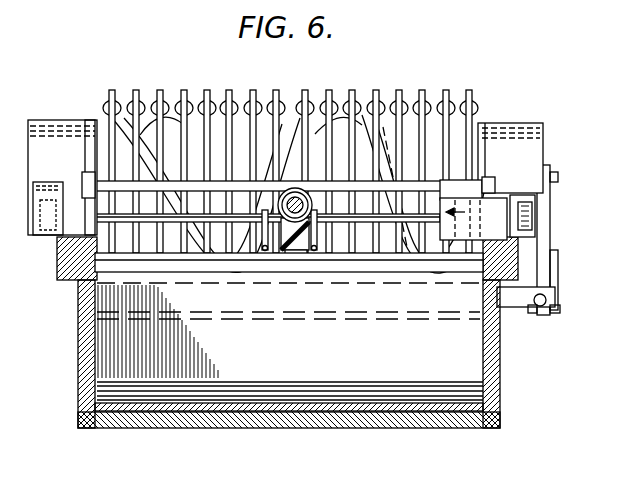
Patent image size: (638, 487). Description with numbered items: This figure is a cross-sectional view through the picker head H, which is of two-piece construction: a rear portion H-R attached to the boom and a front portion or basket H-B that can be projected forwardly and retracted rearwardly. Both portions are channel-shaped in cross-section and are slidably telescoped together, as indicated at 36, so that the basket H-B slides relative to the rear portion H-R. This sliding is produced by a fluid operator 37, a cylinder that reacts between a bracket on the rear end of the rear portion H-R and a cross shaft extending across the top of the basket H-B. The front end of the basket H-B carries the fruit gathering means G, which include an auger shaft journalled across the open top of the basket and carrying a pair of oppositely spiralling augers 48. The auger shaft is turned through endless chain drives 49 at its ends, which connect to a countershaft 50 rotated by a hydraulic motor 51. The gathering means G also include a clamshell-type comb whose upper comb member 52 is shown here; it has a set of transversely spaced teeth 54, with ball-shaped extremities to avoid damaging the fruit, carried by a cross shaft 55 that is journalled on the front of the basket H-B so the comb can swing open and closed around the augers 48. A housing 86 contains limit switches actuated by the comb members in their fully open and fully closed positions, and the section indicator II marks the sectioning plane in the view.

The teeth 54 is at (112, 90).
The upper comb member 52 is at (136, 90).
The fruit gathering means G is at (185, 86).
The augers 48 is at (187, 143).
The fluid operator 37 is at (291, 187).
The housing 86 is at (455, 190).
The endless chain drives 49 is at (530, 225).
The cross shaft 55 is at (105, 183).
The telescoped connection 36 is at (80, 300).
The countershaft 50 is at (360, 254).
The hydraulic motor 51 is at (477, 254).
The basket H-B is at (483, 342).
The rear portion H-R is at (500, 396).
The picker head H is at (292, 332).
The section line II is at (478, 45).